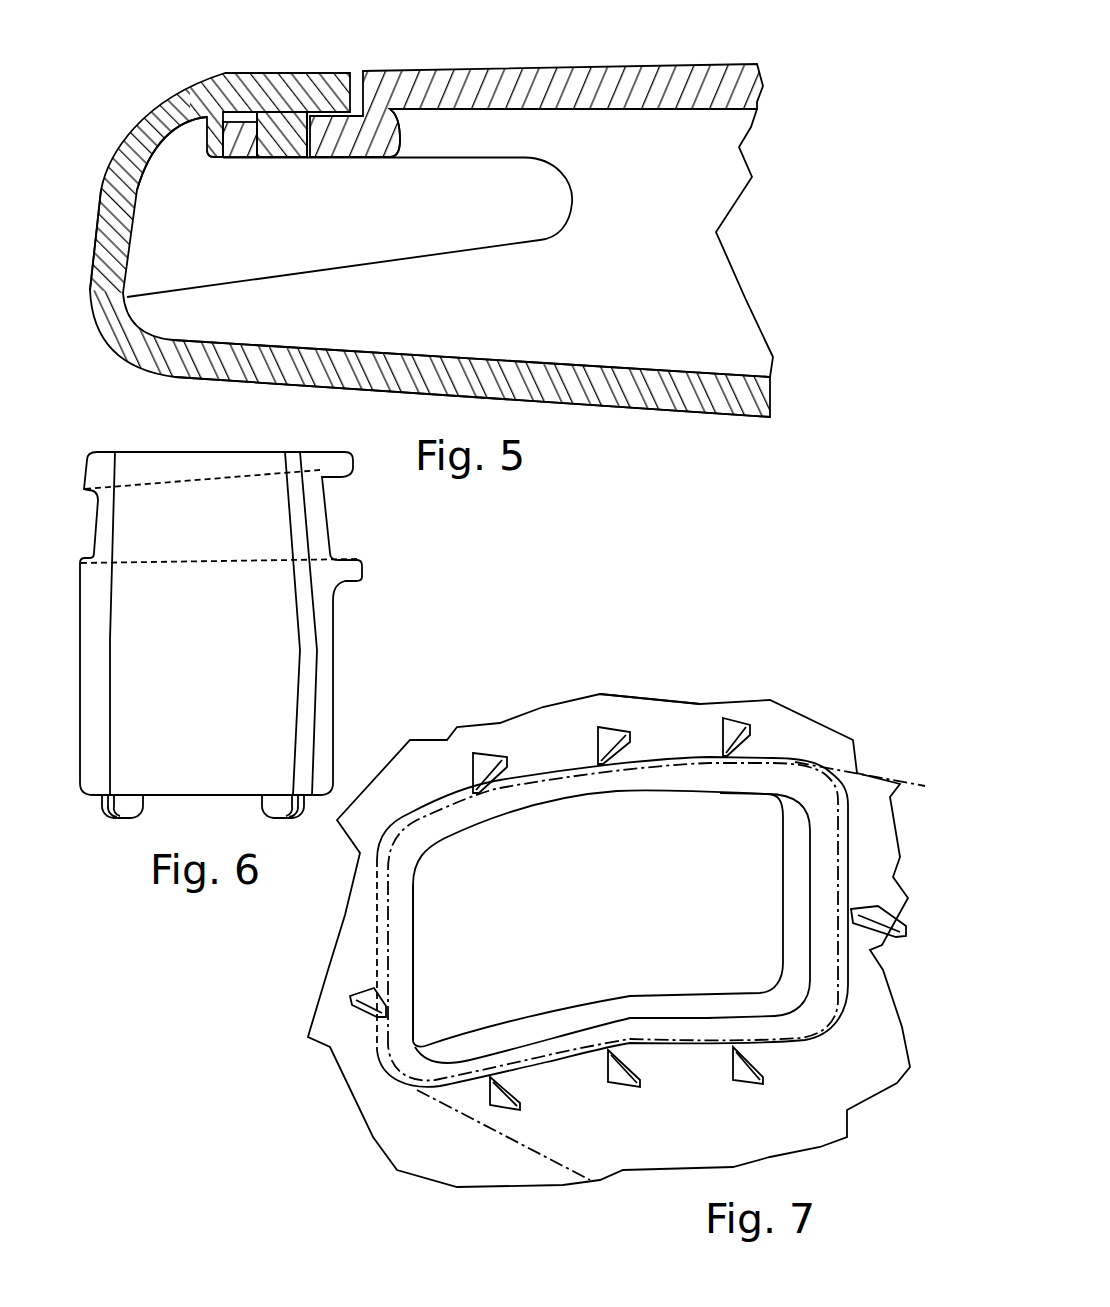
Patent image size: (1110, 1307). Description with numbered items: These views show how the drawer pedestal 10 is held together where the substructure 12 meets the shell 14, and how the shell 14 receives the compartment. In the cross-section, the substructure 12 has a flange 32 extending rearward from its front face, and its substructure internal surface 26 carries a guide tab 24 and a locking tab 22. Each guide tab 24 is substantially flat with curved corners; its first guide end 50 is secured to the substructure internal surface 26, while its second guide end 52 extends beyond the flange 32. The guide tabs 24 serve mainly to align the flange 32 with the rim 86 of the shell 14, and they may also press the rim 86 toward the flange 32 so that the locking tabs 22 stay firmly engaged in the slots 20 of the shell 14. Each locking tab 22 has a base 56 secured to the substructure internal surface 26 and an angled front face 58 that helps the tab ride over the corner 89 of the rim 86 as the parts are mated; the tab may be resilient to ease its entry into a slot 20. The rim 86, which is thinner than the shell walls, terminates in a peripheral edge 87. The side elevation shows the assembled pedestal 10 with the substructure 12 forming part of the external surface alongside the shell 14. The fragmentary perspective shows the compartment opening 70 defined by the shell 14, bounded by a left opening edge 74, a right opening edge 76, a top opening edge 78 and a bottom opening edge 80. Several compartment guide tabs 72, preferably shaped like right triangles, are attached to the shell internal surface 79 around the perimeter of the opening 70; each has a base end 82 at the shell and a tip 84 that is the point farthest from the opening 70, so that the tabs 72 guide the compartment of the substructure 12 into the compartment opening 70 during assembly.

In FIG. 6, the drawer pedestal 10 is at (214, 606).
In FIG. 5, the substructure 12 is at (123, 133).
In FIG. 6, the substructure 12 is at (348, 457).
In FIG. 5, the shell 14 is at (453, 68).
In FIG. 6, the shell 14 is at (170, 466).
In FIG. 7, the shell 14 is at (805, 727).
In FIG. 5, the slots 20 is at (293, 133).
In FIG. 5, the locking tabs 22 is at (272, 120).
In FIG. 5, the guide tabs 24 is at (167, 268).
In FIG. 5, the substructure internal surface 26 is at (173, 147).
In FIG. 5, the flanges 32 is at (200, 77).
In FIG. 5, the first guide end 50 is at (135, 218).
In FIG. 5, the second guide end 52 is at (572, 203).
In FIG. 5, the base 56 is at (277, 113).
In FIG. 5, the angled front face 58 is at (258, 122).
In FIG. 7, the compartment opening 70 is at (668, 812).
In FIG. 7, the compartment guide tabs 72 is at (492, 752).
In FIG. 7, the left opening edge 74 is at (400, 910).
In FIG. 7, the right opening edge 76 is at (830, 848).
In FIG. 7, the top opening edge 78 is at (555, 780).
In FIG. 7, the shell internal surface 79 is at (440, 778).
In FIG. 7, the bottom opening edge 80 is at (665, 1035).
In FIG. 7, the base end 82 is at (592, 752).
In FIG. 7, the tip 84 is at (622, 730).
In FIG. 5, the rim 86 is at (383, 143).
In FIG. 5, the peripheral edge 87 is at (213, 155).
In FIG. 5, the corner 89 is at (187, 103).